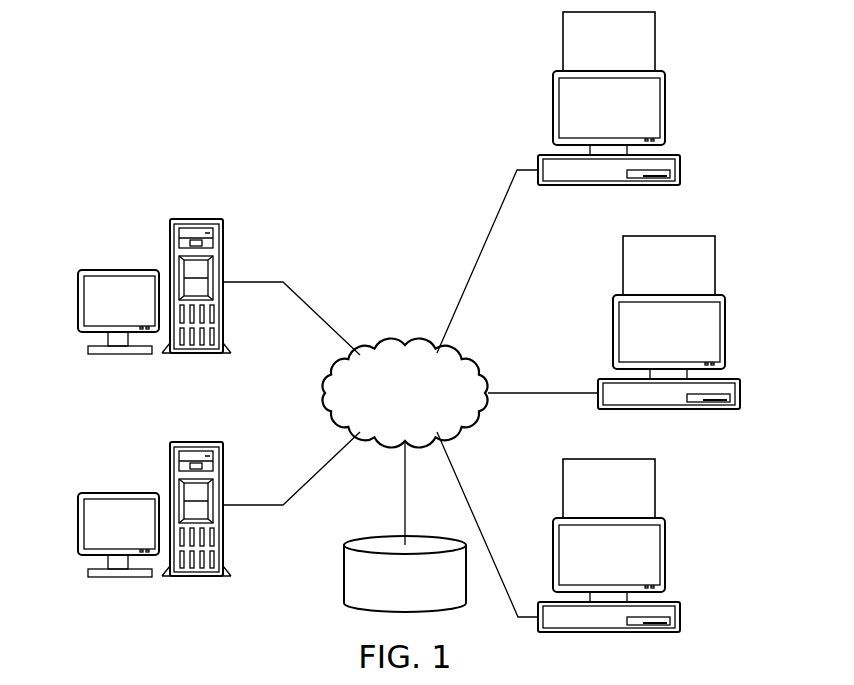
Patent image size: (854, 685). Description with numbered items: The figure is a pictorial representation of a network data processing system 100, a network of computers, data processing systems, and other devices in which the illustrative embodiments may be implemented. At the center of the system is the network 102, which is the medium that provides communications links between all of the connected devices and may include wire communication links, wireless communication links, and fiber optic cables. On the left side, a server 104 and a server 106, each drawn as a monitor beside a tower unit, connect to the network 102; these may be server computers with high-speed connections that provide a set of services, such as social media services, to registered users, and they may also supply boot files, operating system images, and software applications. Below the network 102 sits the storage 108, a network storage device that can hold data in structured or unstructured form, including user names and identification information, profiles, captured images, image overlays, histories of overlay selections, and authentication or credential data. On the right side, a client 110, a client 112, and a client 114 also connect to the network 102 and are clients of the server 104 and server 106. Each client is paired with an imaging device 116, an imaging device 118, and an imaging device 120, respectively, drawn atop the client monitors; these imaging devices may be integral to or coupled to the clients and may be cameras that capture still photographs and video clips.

The network data processing system 100 is at (291, 96).
The network 102 is at (382, 350).
The server 104 is at (78, 524).
The server 106 is at (78, 301).
The storage 108 is at (344, 577).
The client 110 is at (680, 162).
The client 112 is at (742, 398).
The client 114 is at (680, 620).
The imaging device 116 is at (655, 43).
The imaging device 118 is at (715, 268).
The imaging device 120 is at (655, 490).